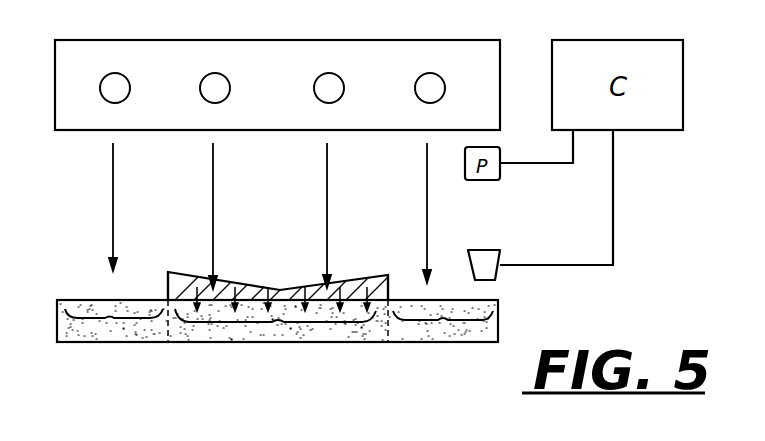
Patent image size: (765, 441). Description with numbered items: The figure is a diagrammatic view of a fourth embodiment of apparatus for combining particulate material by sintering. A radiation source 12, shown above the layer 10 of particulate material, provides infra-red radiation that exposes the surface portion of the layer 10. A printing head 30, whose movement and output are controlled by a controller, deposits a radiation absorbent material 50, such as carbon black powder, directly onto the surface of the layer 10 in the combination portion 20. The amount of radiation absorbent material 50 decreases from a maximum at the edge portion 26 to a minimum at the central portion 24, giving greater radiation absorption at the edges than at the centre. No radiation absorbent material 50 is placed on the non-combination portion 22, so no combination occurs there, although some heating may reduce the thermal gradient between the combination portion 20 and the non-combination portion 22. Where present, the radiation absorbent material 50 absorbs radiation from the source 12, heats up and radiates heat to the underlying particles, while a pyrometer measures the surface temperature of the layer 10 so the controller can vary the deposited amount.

The layer of particulate material 10 is at (58, 330).
The radiation source 12 is at (261, 72).
The combination portion 20 is at (272, 330).
The non-combination portion 22 is at (110, 327).
The central portion 24 is at (278, 288).
The edge portion 26 is at (164, 293).
The printing head 30 is at (487, 268).
The radiation absorbent material 50 is at (352, 292).